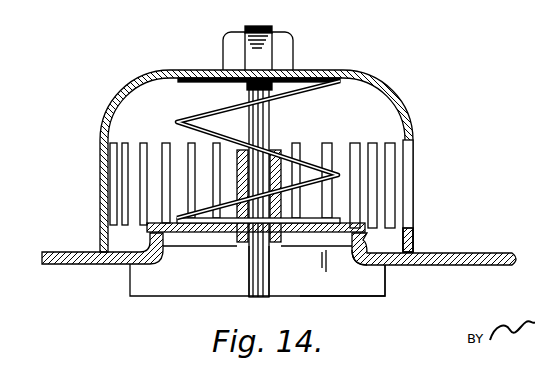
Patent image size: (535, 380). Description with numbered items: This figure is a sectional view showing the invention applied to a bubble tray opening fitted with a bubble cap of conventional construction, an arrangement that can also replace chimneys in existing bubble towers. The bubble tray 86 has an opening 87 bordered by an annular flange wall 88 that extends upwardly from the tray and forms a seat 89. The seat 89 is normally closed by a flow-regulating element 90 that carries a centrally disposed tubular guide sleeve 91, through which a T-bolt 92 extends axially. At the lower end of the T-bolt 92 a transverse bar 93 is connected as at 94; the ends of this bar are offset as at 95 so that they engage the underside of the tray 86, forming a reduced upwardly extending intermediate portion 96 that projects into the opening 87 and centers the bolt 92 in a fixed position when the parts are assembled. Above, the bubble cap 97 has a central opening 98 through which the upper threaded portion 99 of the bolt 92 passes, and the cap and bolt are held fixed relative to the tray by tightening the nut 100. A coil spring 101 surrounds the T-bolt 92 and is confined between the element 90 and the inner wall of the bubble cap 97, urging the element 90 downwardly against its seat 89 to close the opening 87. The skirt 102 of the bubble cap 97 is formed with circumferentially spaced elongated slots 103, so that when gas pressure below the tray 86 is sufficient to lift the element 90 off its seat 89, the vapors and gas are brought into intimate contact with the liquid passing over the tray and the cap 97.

The bubble tray 86 is at (503, 253).
The opening 87 is at (187, 240).
The annular flange wall 88 is at (409, 235).
The seat 89 is at (110, 252).
The flow-regulating element 90 is at (317, 225).
The tubular guide sleeve 91 is at (282, 168).
The T-bolt 92 is at (262, 123).
The transverse bar 93 is at (357, 285).
The connection of bar to bolt 94 is at (255, 272).
The offset ends of the bar 95 is at (357, 264).
The reduced upwardly extending intermediate portion 96 is at (338, 258).
The bubble cap 97 is at (407, 110).
The central opening 98 is at (247, 80).
The upper threaded portion 99 is at (277, 8).
The nut 100 is at (285, 50).
The coil spring 101 is at (173, 123).
The skirt 102 is at (410, 128).
The elongated slots 103 is at (123, 151).